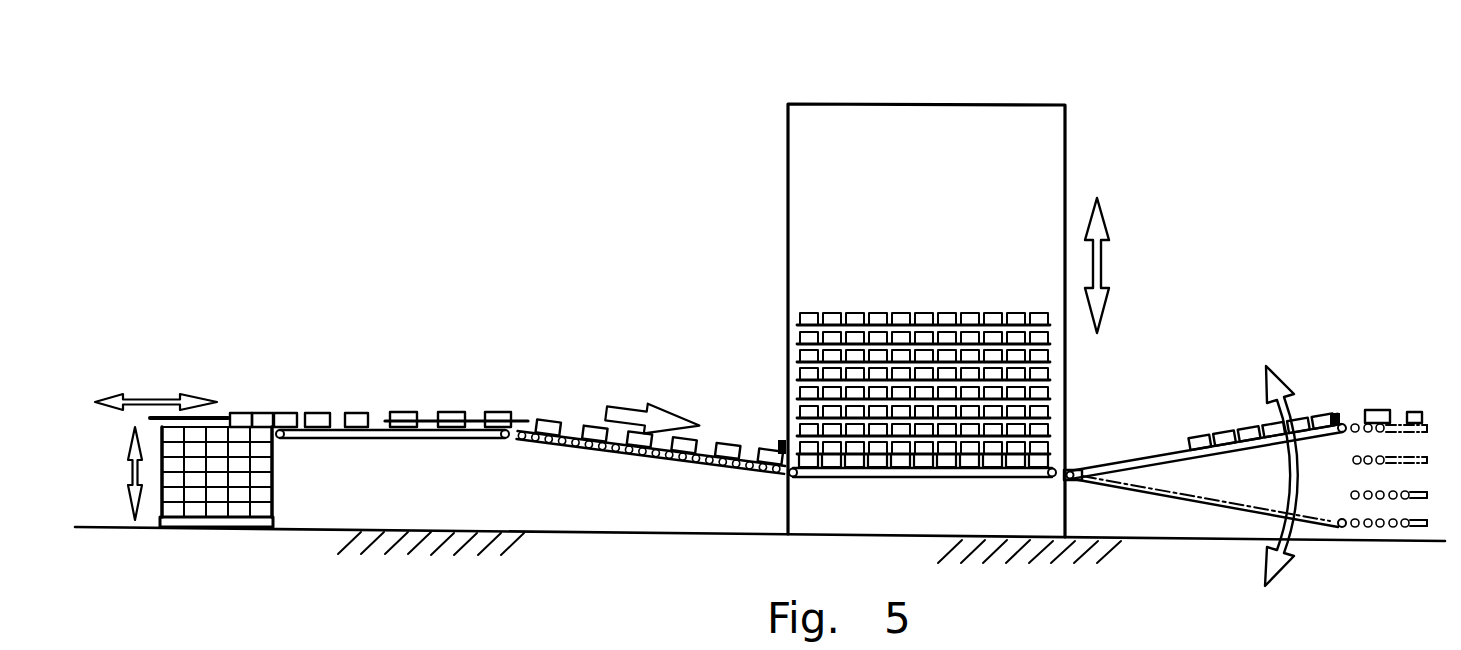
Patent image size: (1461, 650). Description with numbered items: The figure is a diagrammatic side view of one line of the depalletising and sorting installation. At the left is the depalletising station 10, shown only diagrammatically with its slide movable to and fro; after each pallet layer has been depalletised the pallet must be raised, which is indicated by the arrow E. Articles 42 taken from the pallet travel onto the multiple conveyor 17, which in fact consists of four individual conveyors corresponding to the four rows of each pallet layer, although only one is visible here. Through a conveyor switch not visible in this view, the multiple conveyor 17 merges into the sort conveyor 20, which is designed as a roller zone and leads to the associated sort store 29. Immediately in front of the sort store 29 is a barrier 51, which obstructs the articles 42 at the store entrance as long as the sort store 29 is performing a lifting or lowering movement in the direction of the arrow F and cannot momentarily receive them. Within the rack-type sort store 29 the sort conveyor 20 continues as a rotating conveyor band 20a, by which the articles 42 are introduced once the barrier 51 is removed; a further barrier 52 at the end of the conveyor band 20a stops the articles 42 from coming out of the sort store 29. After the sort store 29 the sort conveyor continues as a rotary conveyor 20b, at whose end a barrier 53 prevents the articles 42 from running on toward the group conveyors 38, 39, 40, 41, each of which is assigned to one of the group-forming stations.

The depalletising station 10 is at (116, 424).
The arrow E is at (130, 476).
The arrow F is at (1103, 263).
The articles 42 is at (264, 447).
The multiple conveyor 17 is at (413, 433).
The sort conveyor 20 is at (583, 447).
The barrier 51 is at (781, 452).
The sort store 29 is at (970, 95).
The rotating conveyor band 20a is at (852, 474).
The barrier 52 is at (1066, 464).
The rotary conveyor 20b is at (1183, 457).
The barrier 53 is at (1337, 416).
The group-conveying means 38 is at (1427, 430).
The group conveyor 39 is at (1430, 457).
The group conveyor 40 is at (1425, 498).
The group conveyor 41 is at (1420, 528).